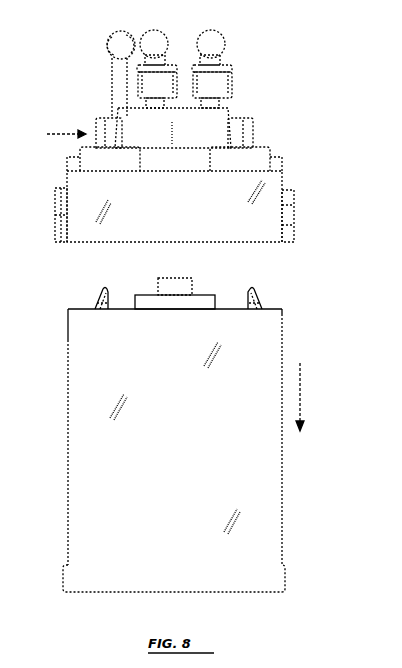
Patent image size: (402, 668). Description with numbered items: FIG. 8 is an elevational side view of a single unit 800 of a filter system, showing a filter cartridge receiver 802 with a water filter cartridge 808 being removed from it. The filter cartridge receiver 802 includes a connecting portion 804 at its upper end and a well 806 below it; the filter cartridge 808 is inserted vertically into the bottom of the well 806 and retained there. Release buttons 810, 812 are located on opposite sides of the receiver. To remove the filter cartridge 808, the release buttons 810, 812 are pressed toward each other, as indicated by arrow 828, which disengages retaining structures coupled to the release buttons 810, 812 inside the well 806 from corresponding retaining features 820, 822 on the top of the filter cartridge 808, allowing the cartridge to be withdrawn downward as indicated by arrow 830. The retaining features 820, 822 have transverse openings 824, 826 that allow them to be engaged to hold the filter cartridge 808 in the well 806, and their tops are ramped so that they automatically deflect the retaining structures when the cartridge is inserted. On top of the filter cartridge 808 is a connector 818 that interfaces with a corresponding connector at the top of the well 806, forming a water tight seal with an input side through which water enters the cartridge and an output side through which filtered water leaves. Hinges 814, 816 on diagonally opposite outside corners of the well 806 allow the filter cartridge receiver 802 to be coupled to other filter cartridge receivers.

The assembly 800 is at (344, 31).
The filter cartridge receiver 802 is at (283, 178).
The connecting portion 804 is at (232, 110).
The well 806 is at (67, 178).
The water filter cartridge 808 is at (67, 430).
The release button 810 is at (97, 128).
The release button 812 is at (252, 128).
The hinge 814 is at (55, 224).
The hinge 816 is at (294, 200).
The connector 818 is at (187, 278).
The retaining feature 820 is at (98, 297).
The retaining feature 822 is at (254, 290).
The transverse opening 824 is at (97, 300).
The transverse opening 826 is at (262, 299).
The arrow 828 is at (62, 130).
The arrow 830 is at (300, 390).